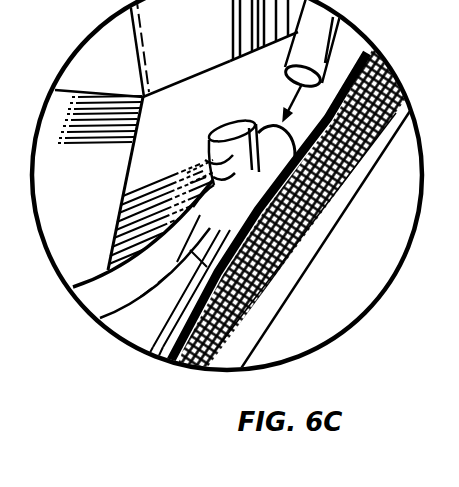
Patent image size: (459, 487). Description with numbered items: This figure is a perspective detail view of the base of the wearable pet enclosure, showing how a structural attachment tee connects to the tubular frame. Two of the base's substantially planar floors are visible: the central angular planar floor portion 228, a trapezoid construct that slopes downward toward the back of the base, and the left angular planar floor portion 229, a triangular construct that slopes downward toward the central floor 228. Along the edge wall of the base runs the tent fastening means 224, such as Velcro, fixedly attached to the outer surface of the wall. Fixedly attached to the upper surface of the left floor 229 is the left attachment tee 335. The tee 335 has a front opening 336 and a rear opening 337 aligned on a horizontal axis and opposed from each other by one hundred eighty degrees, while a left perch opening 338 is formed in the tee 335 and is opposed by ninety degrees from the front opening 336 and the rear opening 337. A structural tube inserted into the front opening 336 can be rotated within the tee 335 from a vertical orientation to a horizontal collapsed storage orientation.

The tent fastening means 224 is at (337, 192).
The central angular planar floor portion 228 is at (77, 218).
The left angular planar floor portion 229 is at (183, 130).
The left attachment tee 335 is at (214, 157).
The front opening 336 is at (190, 292).
The rear opening 337 is at (291, 130).
The left perch opening 338 is at (231, 134).